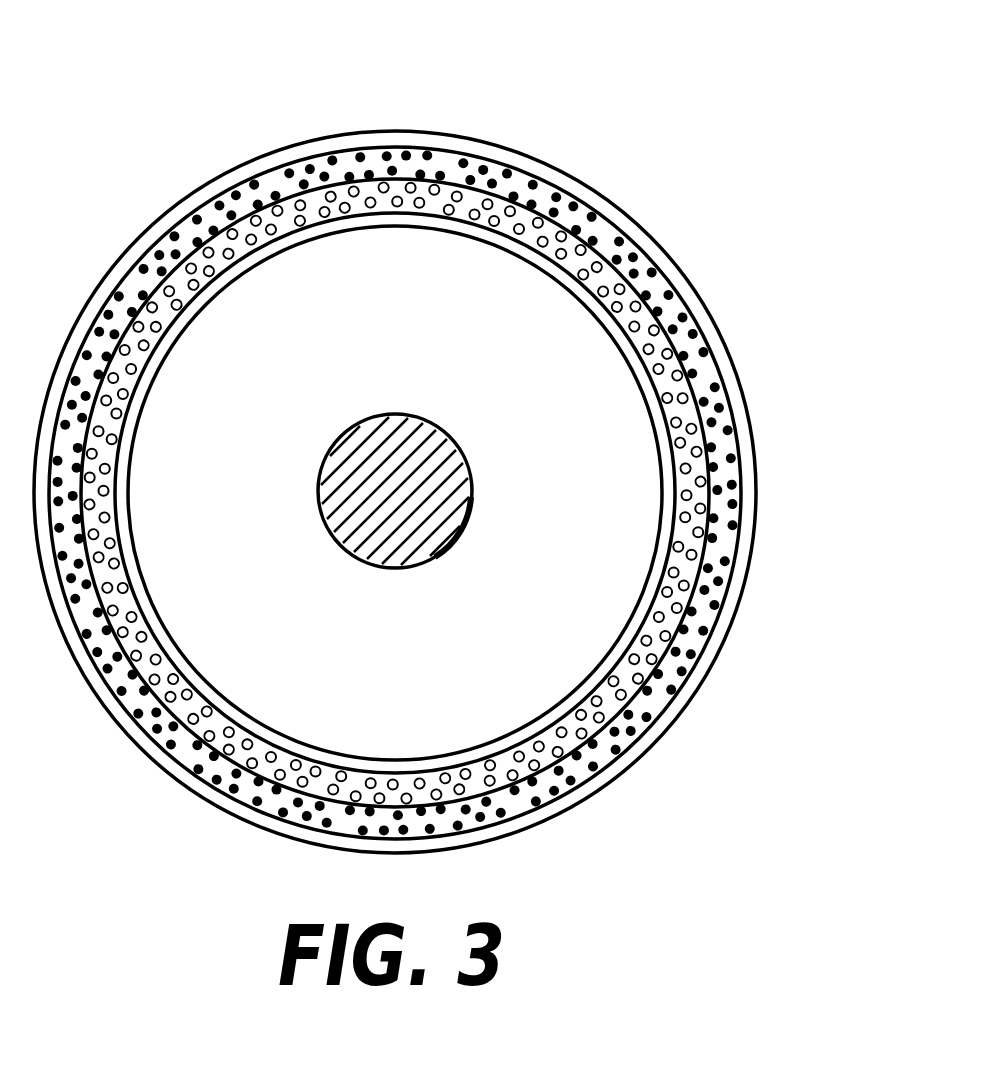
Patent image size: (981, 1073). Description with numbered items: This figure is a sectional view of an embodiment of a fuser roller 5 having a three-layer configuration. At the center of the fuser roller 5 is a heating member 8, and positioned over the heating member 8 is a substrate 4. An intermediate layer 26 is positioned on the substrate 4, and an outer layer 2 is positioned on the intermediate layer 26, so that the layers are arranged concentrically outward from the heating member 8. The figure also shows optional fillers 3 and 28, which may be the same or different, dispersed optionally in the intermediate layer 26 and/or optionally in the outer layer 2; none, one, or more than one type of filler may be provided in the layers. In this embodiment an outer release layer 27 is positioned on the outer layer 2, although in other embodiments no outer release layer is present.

The fuser roller 5 is at (168, 74).
The outer layer 2 is at (193, 220).
The fillers 3 is at (590, 272).
The substrate 4 is at (163, 342).
The heating member 8 is at (393, 413).
The intermediate layer 26 is at (673, 293).
The outer release layer 27 is at (728, 362).
The fillers 28 is at (730, 468).